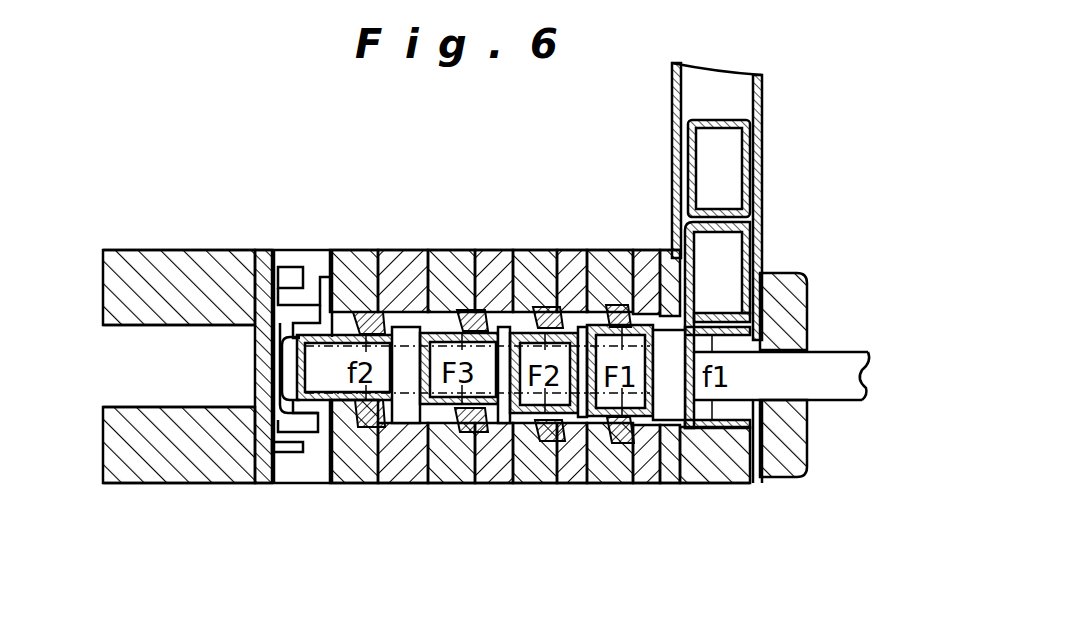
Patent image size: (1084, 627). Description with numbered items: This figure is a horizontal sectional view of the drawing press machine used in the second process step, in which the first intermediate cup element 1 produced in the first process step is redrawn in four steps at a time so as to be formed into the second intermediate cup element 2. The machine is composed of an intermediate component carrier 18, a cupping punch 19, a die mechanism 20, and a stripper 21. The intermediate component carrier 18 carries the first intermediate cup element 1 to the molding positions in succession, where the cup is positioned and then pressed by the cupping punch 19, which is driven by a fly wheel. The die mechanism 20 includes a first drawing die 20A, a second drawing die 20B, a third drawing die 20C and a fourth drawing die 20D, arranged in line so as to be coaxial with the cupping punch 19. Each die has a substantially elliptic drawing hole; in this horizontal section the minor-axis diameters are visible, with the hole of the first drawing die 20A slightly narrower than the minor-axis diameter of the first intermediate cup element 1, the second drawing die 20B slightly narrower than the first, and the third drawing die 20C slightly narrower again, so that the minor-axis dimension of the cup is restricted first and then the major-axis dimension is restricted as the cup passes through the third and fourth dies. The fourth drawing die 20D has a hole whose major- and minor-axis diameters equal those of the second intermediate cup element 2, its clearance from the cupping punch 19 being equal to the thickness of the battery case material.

The first intermediate cup element 1 is at (722, 116).
The second intermediate cup element 2 is at (290, 364).
The intermediate component carrier 18 is at (765, 173).
The cupping punch 19 is at (827, 378).
The die mechanism 20 is at (506, 451).
The first drawing die 20A is at (630, 422).
The second drawing die 20B is at (550, 441).
The third drawing die 20C is at (470, 432).
The fourth drawing die 20D is at (370, 427).
The stripper 21 is at (275, 420).